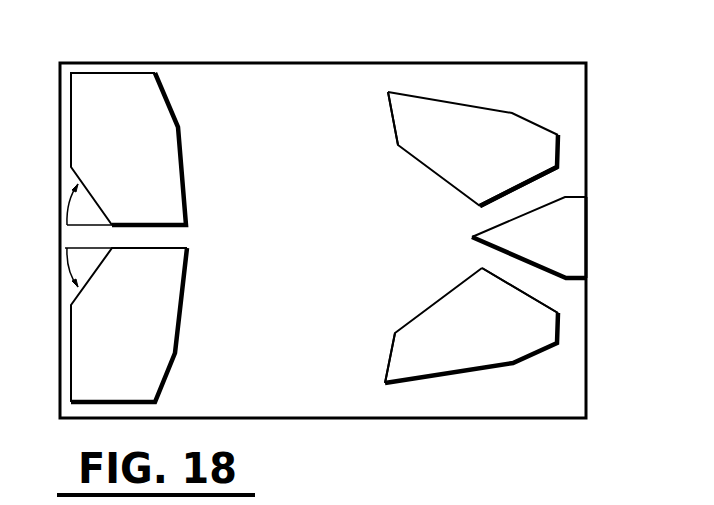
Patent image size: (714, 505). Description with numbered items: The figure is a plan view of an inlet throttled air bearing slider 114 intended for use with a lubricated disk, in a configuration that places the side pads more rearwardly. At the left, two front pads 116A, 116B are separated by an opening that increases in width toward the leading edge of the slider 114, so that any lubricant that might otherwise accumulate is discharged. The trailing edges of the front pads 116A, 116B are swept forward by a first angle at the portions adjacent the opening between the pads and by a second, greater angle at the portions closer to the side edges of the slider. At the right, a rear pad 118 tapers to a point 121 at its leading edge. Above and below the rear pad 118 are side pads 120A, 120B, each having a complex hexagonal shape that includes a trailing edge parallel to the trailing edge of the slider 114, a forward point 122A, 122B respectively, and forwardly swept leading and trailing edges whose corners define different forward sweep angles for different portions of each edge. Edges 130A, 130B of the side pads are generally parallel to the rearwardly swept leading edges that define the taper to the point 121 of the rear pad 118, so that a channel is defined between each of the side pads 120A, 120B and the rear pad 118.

The slider 114 is at (425, 63).
The front pad 116A is at (183, 158).
The front pad 116B is at (178, 333).
The rear pad 118 is at (575, 243).
The side pad 120A is at (440, 167).
The side pad 120B is at (420, 321).
The point 121 is at (472, 237).
The forward point 122A is at (388, 92).
The forward point 122B is at (385, 383).
The edge 130A is at (540, 171).
The edge 130B is at (530, 297).